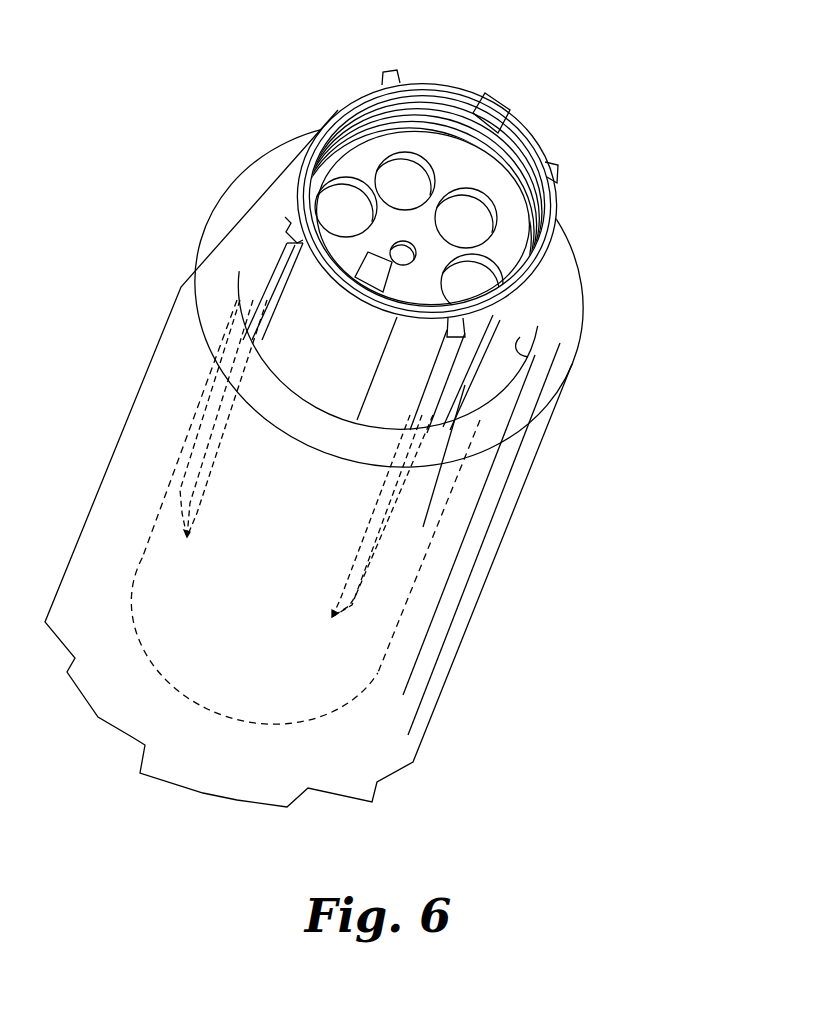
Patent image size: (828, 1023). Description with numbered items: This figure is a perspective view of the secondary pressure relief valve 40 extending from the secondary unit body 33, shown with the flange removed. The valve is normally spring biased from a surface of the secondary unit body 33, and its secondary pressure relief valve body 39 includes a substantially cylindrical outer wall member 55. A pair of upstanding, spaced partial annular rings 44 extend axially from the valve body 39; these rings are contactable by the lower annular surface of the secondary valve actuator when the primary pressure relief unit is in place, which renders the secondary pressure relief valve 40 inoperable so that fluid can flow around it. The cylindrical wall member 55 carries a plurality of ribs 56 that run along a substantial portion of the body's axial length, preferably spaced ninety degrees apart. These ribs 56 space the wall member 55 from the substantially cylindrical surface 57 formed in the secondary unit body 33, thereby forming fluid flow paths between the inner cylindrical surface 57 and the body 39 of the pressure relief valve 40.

The secondary unit body 33 is at (577, 357).
The secondary pressure relief valve body 39 is at (320, 125).
The secondary pressure relief valve 40 is at (557, 112).
The partial annular rings 44 is at (492, 102).
The cylindrical outer wall member 55 is at (553, 247).
The ribs 56 is at (293, 228).
The cylindrical surface 57 is at (528, 357).